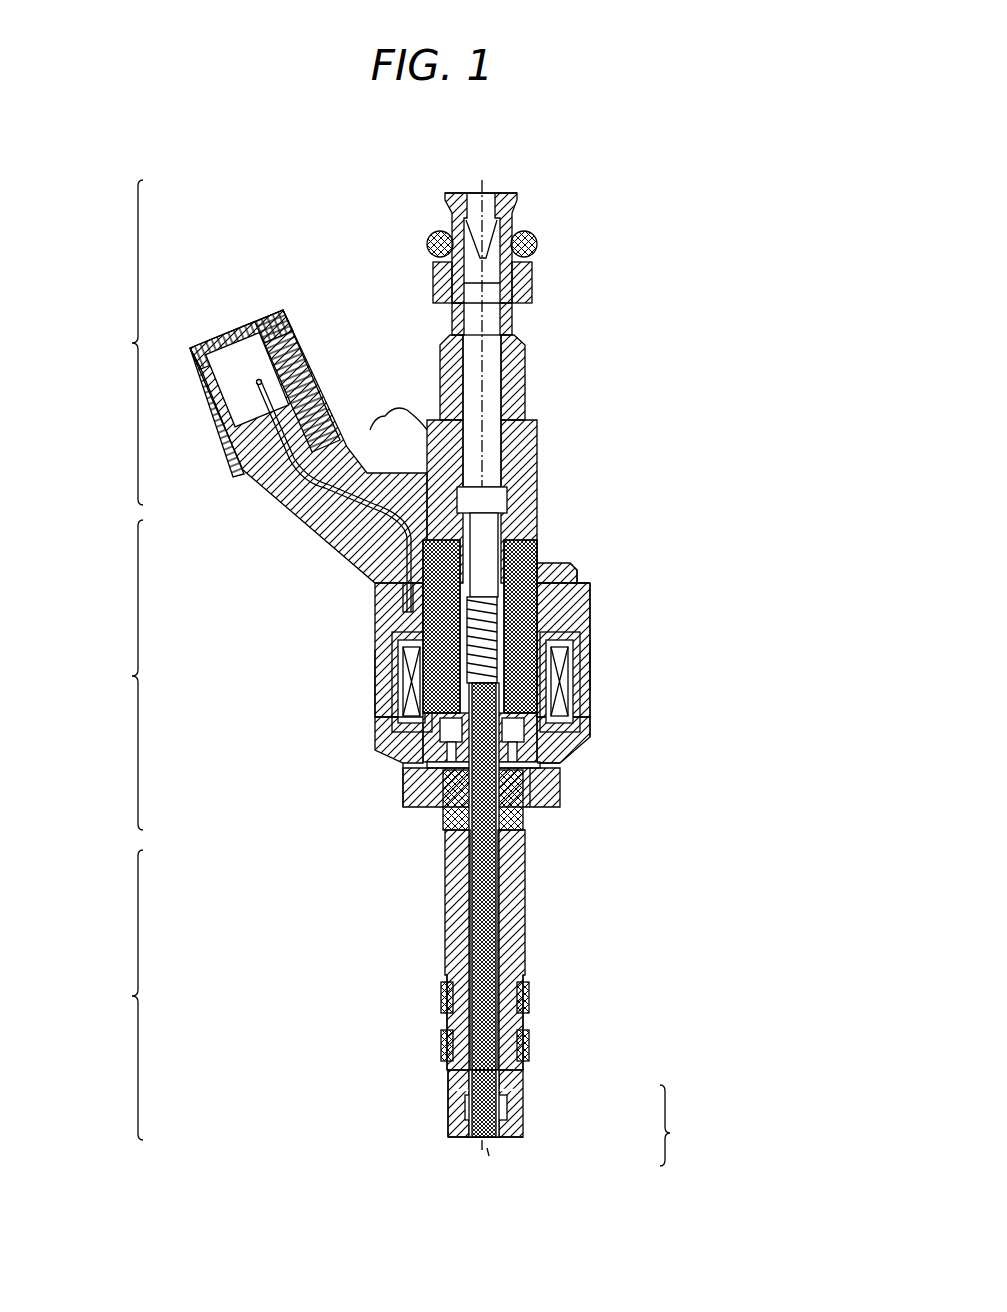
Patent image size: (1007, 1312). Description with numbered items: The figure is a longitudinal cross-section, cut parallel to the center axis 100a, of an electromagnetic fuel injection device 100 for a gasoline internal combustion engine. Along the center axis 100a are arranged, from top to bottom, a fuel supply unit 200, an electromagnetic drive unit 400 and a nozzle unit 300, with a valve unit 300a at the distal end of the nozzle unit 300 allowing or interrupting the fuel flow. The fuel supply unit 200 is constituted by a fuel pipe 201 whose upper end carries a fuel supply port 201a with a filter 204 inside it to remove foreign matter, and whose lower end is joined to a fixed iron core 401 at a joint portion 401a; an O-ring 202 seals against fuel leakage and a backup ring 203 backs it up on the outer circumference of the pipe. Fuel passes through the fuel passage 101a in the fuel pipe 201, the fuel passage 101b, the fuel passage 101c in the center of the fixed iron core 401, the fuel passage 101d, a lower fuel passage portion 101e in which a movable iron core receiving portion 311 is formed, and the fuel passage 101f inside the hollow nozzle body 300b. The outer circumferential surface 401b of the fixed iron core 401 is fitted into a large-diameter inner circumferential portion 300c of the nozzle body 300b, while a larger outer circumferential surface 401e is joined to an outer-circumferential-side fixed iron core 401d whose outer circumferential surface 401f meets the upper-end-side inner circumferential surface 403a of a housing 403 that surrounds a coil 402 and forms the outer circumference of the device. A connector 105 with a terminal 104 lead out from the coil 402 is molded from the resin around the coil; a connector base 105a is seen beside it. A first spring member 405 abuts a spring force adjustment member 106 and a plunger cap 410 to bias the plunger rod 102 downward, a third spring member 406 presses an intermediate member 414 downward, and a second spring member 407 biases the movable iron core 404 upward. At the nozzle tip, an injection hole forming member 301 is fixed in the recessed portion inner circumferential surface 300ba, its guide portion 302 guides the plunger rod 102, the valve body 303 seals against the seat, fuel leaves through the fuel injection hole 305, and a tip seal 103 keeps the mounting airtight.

The fuel injection device 100 is at (99, 199).
The center axis 100a is at (500, 192).
The fuel passage 101a is at (528, 296).
The fuel passage 101b is at (483, 403).
The fuel passage 101c is at (534, 456).
The fuel passage 101d is at (548, 768).
The lower fuel passage portion 101e is at (545, 796).
The fuel passage 101f is at (447, 1120).
The plunger rod 102 is at (497, 872).
The tip seal 103 is at (527, 1033).
The terminal 104 is at (257, 380).
The connector 105 is at (293, 348).
The connector base 105a is at (405, 472).
The spring force adjustment member 106 is at (372, 428).
The fuel supply unit 200 is at (114, 342).
The fuel pipe 201 is at (452, 305).
The fuel supply port 201a is at (466, 215).
The O-ring 202 is at (536, 238).
The backup ring 203 is at (533, 268).
The filter 204 is at (520, 213).
The nozzle unit 300 is at (114, 995).
The valve unit 300a is at (588, 1118).
The nozzle body 300b is at (447, 857).
The recessed portion inner circumferential surface 300ba is at (450, 1080).
The large-diameter inner circumferential portion 300c is at (377, 692).
The injection hole forming member 301 is at (527, 1117).
The guide portion 302 is at (450, 1137).
The valve body 303 is at (493, 1103).
The fuel injection hole 305 is at (500, 1143).
The movable iron core receiving portion 311 is at (400, 778).
The electromagnetic drive unit 400 is at (114, 675).
The fixed iron core 401 is at (592, 656).
The joint portion 401a is at (538, 484).
The outer circumferential surface 401b is at (593, 663).
The outer-circumferential-side fixed iron core 401d is at (593, 598).
The outer circumferential surface 401e is at (590, 583).
The outer circumferential surface 401f is at (590, 628).
The coil 402 is at (593, 693).
The housing 403 is at (593, 728).
The upper-end-side inner circumferential surface 403a is at (590, 622).
The movable iron core 404 is at (393, 762).
The first spring member 405 is at (540, 553).
The third spring member 406 is at (562, 760).
The second spring member 407 is at (413, 810).
The plunger cap 410 is at (393, 670).
The intermediate member 414 is at (378, 735).